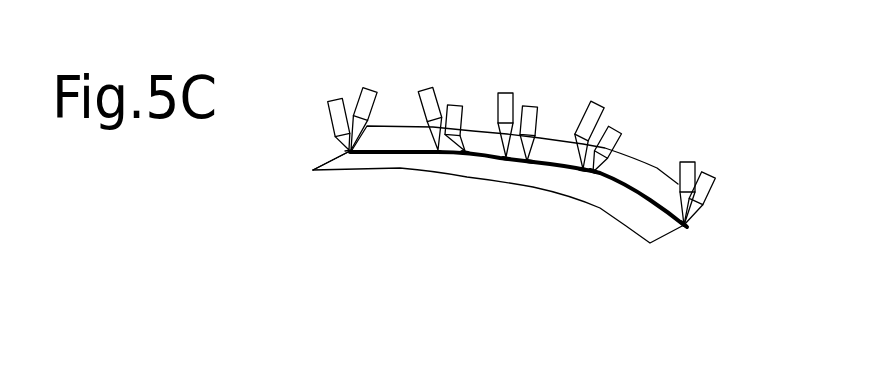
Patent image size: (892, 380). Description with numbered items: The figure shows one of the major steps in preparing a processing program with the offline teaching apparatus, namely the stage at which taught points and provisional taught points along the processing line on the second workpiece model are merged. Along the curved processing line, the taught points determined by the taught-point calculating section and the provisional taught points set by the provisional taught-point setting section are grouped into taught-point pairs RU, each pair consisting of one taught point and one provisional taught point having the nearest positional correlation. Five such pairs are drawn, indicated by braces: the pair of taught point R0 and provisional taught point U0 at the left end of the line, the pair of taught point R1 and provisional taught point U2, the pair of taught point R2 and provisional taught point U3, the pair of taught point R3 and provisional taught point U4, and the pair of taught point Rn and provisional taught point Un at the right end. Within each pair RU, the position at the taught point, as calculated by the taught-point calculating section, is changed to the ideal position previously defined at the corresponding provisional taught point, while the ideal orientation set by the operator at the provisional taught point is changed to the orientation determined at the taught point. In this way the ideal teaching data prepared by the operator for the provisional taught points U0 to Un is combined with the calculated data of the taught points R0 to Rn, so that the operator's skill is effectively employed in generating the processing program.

The taught-point pair RU is at (378, 77).
The taught point R0 is at (345, 151).
The provisional taught point U0 is at (317, 188).
The provisional taught point U2 is at (437, 158).
The taught point R1 is at (462, 160).
The provisional taught point U3 is at (500, 160).
The taught point R2 is at (530, 165).
The provisional taught point U4 is at (580, 170).
The taught point R3 is at (593, 172).
The provisional taught point Un is at (686, 228).
The taught point Rn is at (690, 228).